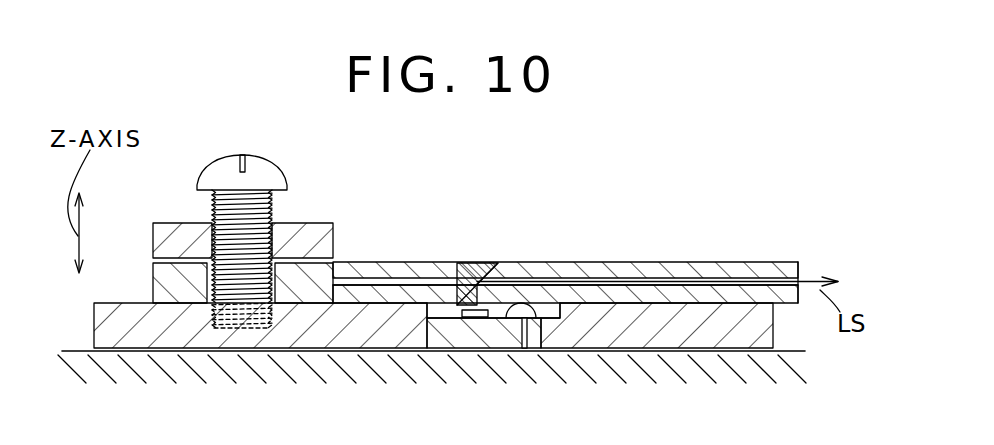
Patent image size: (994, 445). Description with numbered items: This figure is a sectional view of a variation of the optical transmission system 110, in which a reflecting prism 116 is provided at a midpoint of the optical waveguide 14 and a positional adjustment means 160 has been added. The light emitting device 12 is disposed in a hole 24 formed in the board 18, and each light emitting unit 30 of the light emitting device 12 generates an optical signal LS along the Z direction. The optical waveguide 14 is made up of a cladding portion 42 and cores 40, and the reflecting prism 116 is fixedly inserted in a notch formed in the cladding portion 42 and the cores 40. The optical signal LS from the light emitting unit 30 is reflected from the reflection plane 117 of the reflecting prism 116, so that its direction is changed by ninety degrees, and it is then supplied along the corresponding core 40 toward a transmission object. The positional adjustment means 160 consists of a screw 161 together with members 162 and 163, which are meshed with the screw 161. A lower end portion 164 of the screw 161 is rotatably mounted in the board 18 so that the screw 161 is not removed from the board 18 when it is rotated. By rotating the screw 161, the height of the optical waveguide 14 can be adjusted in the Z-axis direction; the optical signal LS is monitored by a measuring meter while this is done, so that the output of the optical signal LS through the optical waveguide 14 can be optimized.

The optical transmission system 110 is at (565, 230).
The optical waveguide 14 is at (736, 262).
The cladding portion 42 is at (598, 272).
The core 40 is at (808, 274).
The light emitting unit 30 is at (435, 313).
The reflecting prism 116 is at (462, 263).
The reflection plane 117 is at (483, 270).
The board 18 is at (755, 333).
The hole 24 is at (427, 322).
The light emitting device 12 is at (488, 333).
The positional adjustment means 160 is at (210, 305).
The screw 161 is at (265, 265).
The member 162 is at (172, 278).
The member 163 is at (168, 233).
The lower end portion 164 is at (260, 330).